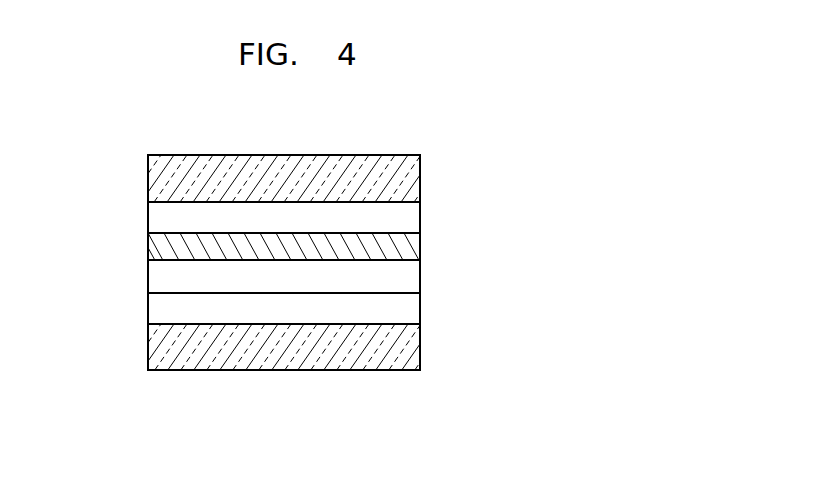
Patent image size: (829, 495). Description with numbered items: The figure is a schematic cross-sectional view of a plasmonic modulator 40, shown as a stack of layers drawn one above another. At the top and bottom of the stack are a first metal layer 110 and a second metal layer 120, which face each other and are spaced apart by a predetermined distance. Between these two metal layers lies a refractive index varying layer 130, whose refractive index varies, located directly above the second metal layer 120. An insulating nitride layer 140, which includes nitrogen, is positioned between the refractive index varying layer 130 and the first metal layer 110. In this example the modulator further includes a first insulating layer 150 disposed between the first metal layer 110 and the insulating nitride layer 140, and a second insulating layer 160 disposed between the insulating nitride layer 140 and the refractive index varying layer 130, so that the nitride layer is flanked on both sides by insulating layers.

The plasmonic modulator 40 is at (98, 134).
The first metal layer 110 is at (413, 180).
The first insulating layer 150 is at (413, 215).
The insulating nitride layer 140 is at (413, 248).
The second insulating layer 160 is at (413, 280).
The refractive index varying layer 130 is at (413, 312).
The second metal layer 120 is at (413, 346).